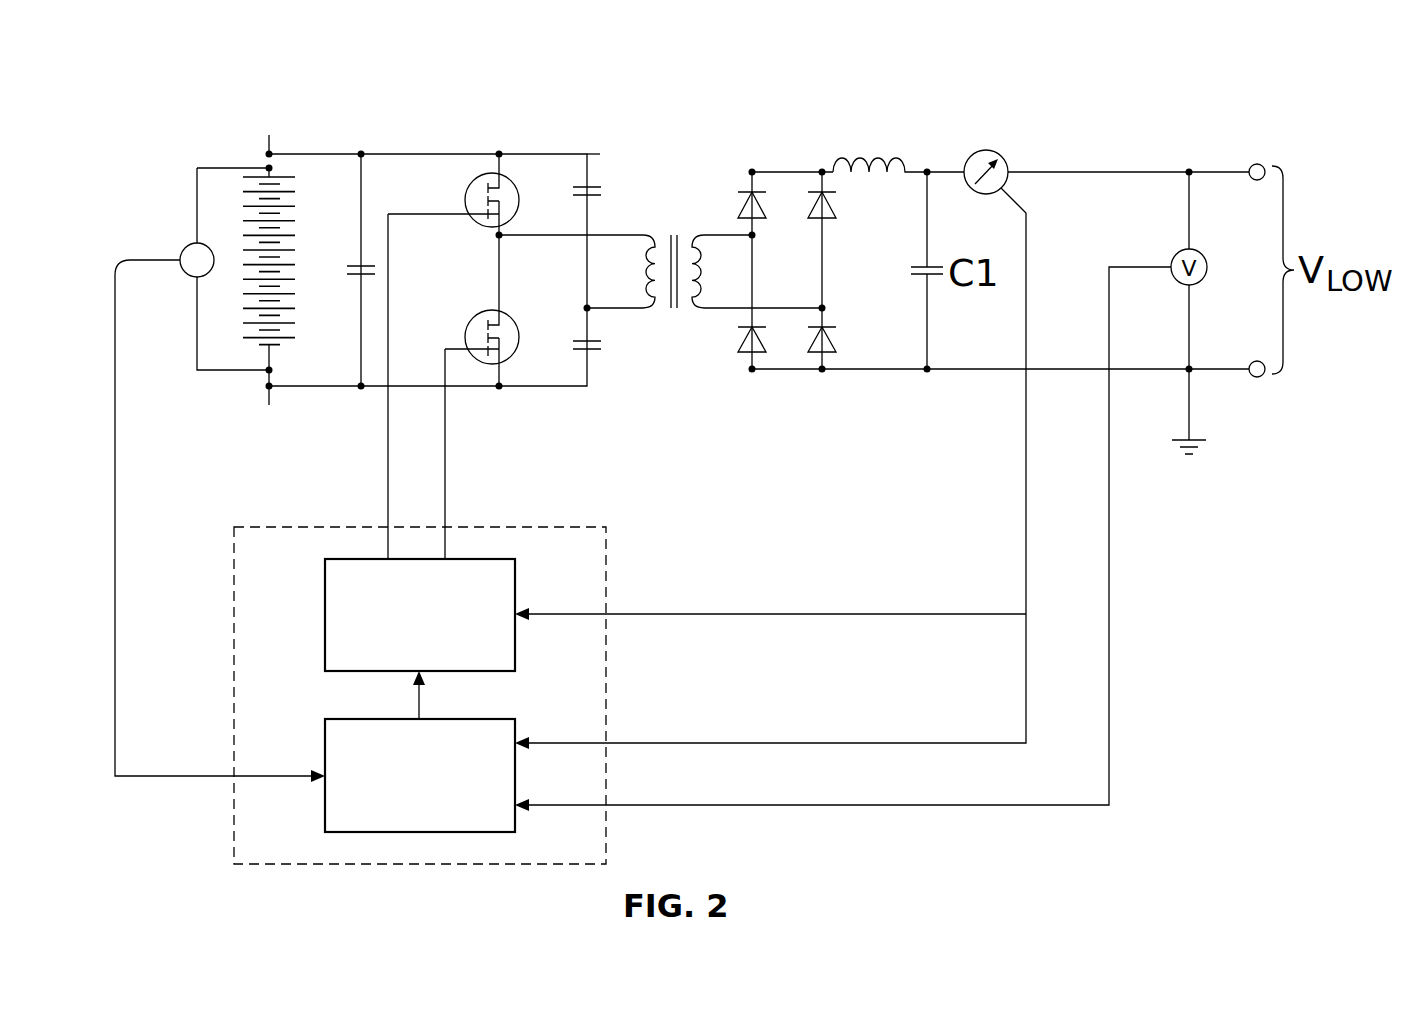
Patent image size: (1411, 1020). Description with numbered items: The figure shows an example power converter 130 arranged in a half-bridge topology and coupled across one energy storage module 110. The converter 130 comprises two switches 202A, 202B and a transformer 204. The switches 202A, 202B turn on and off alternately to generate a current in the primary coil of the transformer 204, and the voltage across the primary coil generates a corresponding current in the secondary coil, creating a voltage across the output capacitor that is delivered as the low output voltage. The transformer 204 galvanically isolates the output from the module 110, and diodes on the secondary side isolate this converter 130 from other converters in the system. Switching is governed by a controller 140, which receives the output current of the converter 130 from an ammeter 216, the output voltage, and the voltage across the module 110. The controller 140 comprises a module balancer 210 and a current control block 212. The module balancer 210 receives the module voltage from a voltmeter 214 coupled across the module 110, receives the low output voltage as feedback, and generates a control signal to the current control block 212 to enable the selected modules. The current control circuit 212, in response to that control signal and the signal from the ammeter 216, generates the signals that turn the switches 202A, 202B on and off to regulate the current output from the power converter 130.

The power converter 130 is at (808, 62).
The energy storage module 110 is at (238, 232).
The voltmeter 214 is at (183, 272).
The switch 202A is at (467, 185).
The switch 202B is at (515, 355).
The transformer 204 is at (675, 228).
The ammeter 216 is at (990, 150).
The controller 140 is at (305, 525).
The current control circuit 212 is at (395, 662).
The module balancer 210 is at (395, 822).